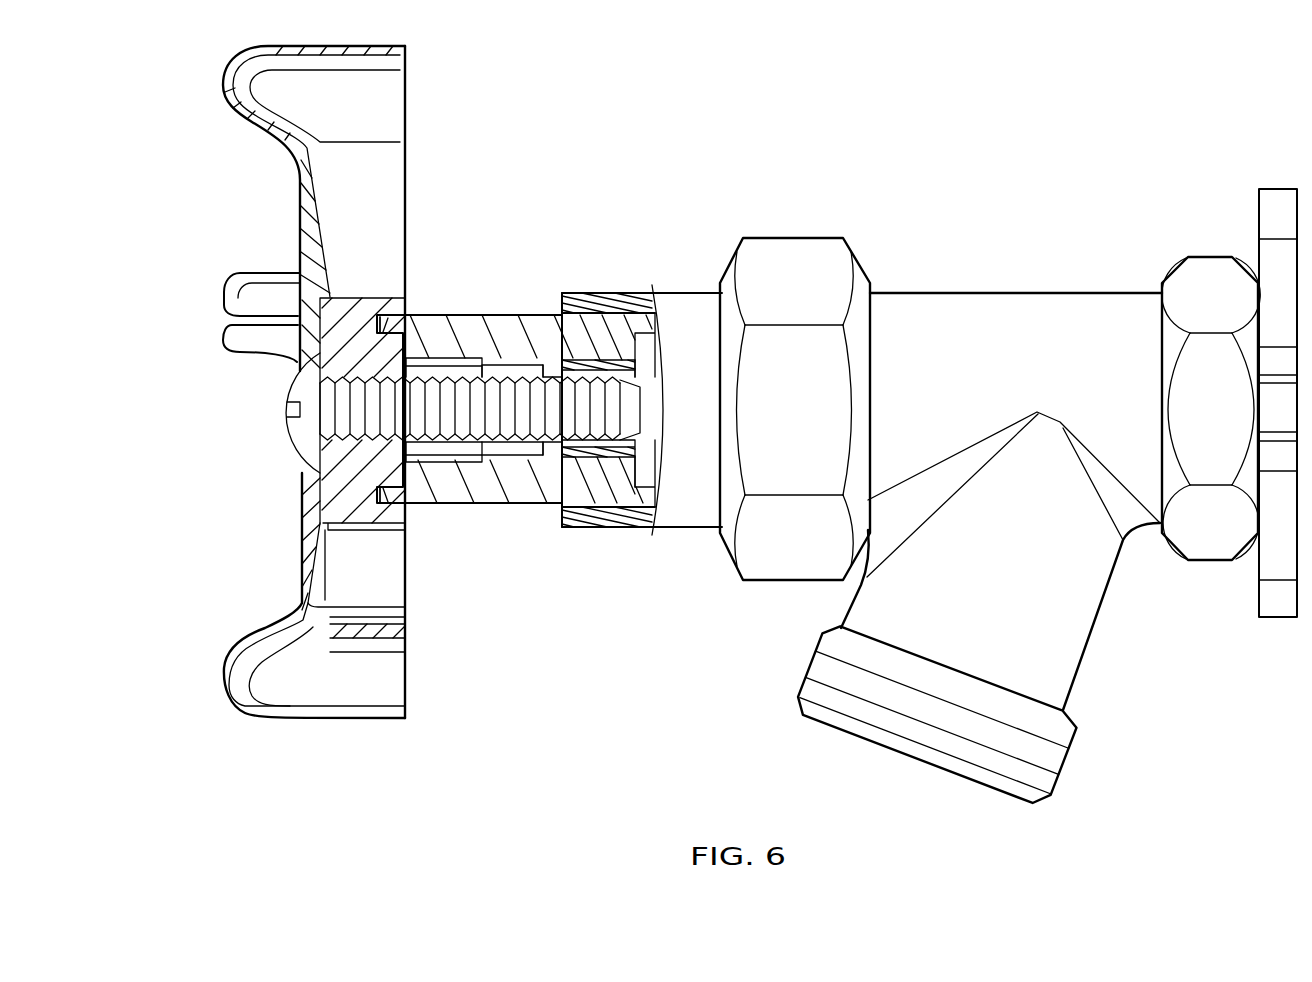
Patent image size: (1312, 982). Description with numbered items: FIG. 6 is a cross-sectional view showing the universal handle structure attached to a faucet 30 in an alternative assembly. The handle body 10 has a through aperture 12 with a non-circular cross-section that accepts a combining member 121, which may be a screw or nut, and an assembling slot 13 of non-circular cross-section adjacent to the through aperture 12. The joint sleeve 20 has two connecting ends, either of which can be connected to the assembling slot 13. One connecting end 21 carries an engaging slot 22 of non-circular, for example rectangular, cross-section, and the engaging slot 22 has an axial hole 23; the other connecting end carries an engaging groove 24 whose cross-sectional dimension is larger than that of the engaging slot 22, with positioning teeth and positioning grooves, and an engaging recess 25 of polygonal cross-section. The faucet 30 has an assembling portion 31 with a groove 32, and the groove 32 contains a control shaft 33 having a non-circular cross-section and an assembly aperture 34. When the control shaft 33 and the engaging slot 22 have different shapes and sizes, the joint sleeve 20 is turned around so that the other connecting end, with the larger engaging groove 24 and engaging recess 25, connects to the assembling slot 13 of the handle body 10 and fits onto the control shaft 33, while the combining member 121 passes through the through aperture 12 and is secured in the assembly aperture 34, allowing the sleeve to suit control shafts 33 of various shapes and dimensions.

The handle body 10 is at (355, 196).
The combining member 121 is at (320, 374).
The through aperture 12 is at (320, 447).
The assembling slot 13 is at (377, 488).
The joint sleeve 20 is at (422, 508).
The engaging groove 24 is at (426, 372).
The engaging recess 25 is at (494, 448).
The axial hole 23 is at (553, 450).
The engaging slot 22 is at (573, 353).
The groove 32 is at (593, 360).
The assembly aperture 34 is at (620, 372).
The control shaft 33 is at (582, 457).
The assembling portion 31 is at (608, 457).
The connecting end 21 is at (655, 490).
The faucet 30 is at (945, 320).